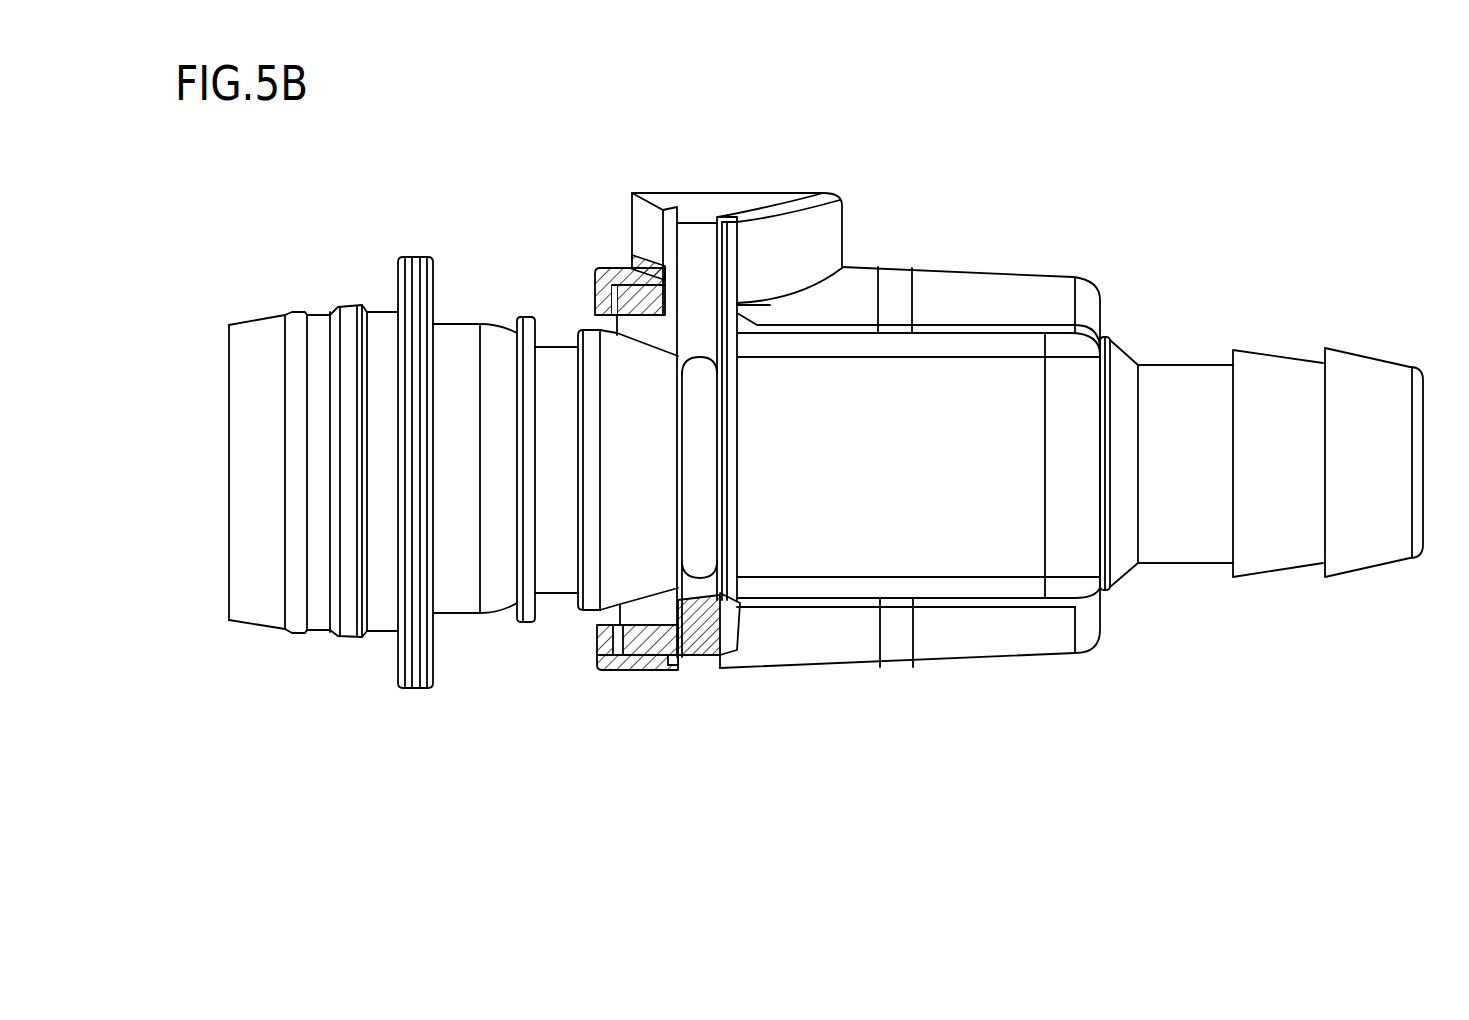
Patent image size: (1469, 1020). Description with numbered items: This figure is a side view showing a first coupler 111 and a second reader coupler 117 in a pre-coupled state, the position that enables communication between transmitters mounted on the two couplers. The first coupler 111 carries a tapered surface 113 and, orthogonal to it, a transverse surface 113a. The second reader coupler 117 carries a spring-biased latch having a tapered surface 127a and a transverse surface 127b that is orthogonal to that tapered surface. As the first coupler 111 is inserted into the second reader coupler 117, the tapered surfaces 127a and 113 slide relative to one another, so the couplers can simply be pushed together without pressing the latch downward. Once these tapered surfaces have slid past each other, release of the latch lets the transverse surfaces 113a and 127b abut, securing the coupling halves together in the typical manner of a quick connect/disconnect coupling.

The first coupler 111 is at (445, 243).
The tapered surface 113 is at (637, 600).
The transverse surface 113a is at (578, 598).
The second reader coupler 117 is at (923, 227).
The tapered surface 127a is at (695, 595).
The transverse surface 127b is at (718, 597).